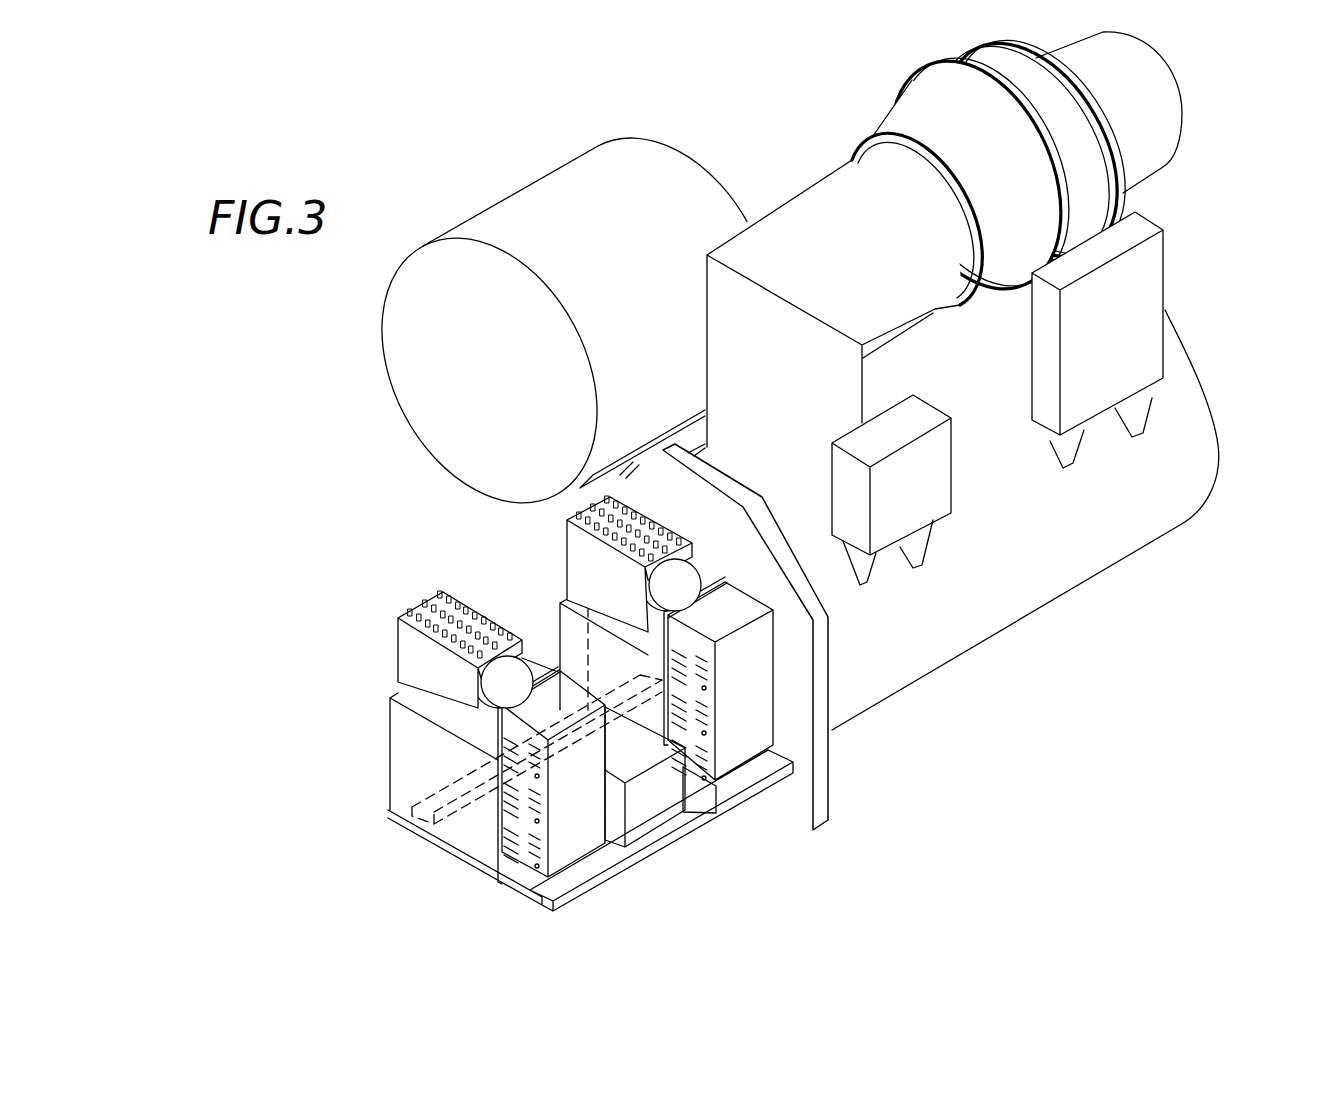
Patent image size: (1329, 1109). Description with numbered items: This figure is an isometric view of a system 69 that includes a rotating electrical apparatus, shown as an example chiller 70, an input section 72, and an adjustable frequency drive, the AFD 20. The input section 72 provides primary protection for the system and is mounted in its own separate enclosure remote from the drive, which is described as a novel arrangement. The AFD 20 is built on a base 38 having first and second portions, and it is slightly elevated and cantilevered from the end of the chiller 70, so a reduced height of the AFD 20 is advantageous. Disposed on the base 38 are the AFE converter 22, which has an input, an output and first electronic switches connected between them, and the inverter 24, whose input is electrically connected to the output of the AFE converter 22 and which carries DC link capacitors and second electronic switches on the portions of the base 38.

The adjustable frequency drive 20 is at (420, 855).
The AFE converter 22 is at (408, 655).
The inverter 24 is at (577, 557).
The base 38 is at (660, 833).
The system 69 is at (779, 138).
The chiller 70 is at (910, 732).
The input section 72 is at (1165, 262).